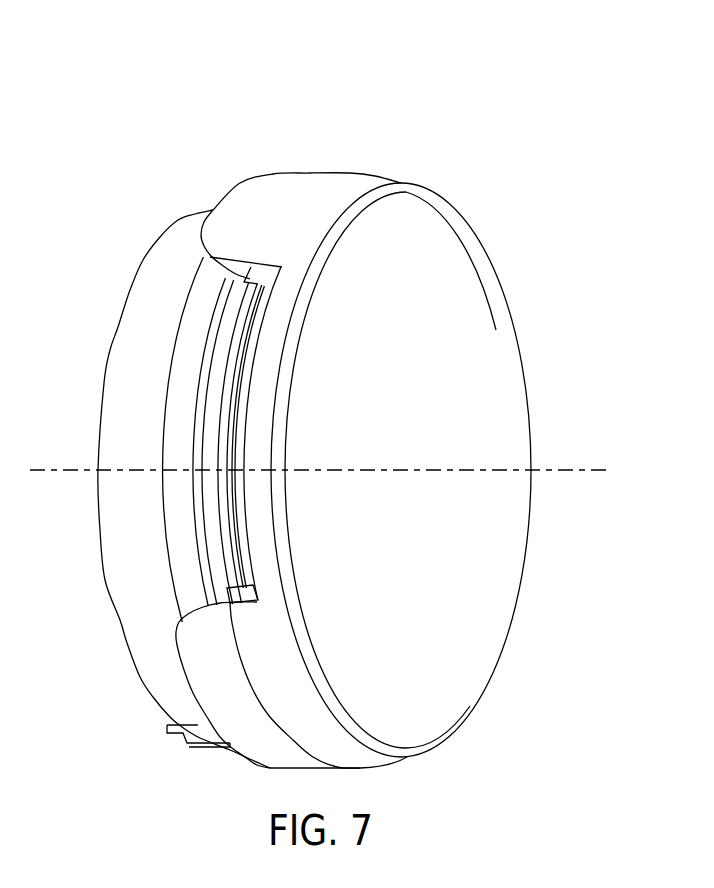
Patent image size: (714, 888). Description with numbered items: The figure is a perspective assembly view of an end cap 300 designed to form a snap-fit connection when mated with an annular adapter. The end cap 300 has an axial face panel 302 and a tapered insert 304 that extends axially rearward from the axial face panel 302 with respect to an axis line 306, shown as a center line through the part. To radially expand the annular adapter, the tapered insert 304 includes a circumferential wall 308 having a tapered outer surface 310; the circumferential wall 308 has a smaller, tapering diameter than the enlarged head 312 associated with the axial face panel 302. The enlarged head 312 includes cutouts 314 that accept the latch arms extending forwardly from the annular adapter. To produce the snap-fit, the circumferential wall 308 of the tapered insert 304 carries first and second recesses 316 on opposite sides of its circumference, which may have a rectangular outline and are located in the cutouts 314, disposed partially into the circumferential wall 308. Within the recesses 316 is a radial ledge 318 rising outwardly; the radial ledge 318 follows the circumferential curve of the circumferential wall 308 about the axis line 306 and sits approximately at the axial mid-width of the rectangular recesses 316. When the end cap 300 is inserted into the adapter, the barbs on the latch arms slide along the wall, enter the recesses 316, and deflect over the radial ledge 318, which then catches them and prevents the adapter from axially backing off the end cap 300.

The end cap 300 is at (470, 82).
The axial face panel 302 is at (488, 316).
The tapered insert 304 is at (160, 237).
The axis line 306 is at (558, 470).
The circumferential wall 308 is at (175, 597).
The tapered outer surface 310 is at (150, 668).
The enlarged head 312 is at (288, 180).
The cutouts 314 is at (227, 255).
The recesses 316 is at (217, 372).
The radial ledge 318 is at (227, 530).